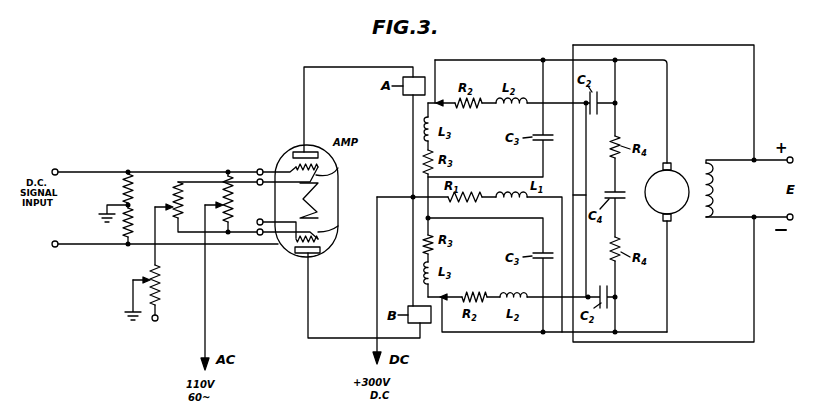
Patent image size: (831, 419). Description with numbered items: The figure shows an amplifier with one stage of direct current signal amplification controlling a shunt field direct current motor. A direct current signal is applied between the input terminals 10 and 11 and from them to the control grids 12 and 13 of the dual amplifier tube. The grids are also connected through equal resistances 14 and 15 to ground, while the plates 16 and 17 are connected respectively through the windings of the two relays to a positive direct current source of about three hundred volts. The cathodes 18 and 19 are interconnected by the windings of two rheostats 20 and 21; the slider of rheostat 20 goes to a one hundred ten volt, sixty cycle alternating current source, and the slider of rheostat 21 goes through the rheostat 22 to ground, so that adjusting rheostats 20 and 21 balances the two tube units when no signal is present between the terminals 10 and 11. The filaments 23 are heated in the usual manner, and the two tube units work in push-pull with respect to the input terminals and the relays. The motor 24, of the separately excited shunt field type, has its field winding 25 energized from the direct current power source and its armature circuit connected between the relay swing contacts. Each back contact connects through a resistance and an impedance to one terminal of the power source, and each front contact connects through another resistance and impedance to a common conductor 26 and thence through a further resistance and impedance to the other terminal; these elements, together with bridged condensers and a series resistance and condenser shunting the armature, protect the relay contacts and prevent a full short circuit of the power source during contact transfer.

The input terminal 10 is at (55, 162).
The input terminal 11 is at (55, 257).
The control grid 12 is at (295, 165).
The control grid 13 is at (296, 242).
The resistance 14 is at (122, 186).
The resistance 15 is at (122, 228).
The plate 16 is at (296, 151).
The plate 17 is at (320, 253).
The cathode 18 is at (338, 170).
The cathode 19 is at (330, 230).
The rheostat 20 is at (222, 193).
The rheostat 21 is at (172, 193).
The rheostat 22 is at (150, 267).
The filaments 23 is at (313, 207).
The motor 24 is at (674, 181).
The field winding 25 is at (718, 191).
The common conductor 26 is at (439, 211).